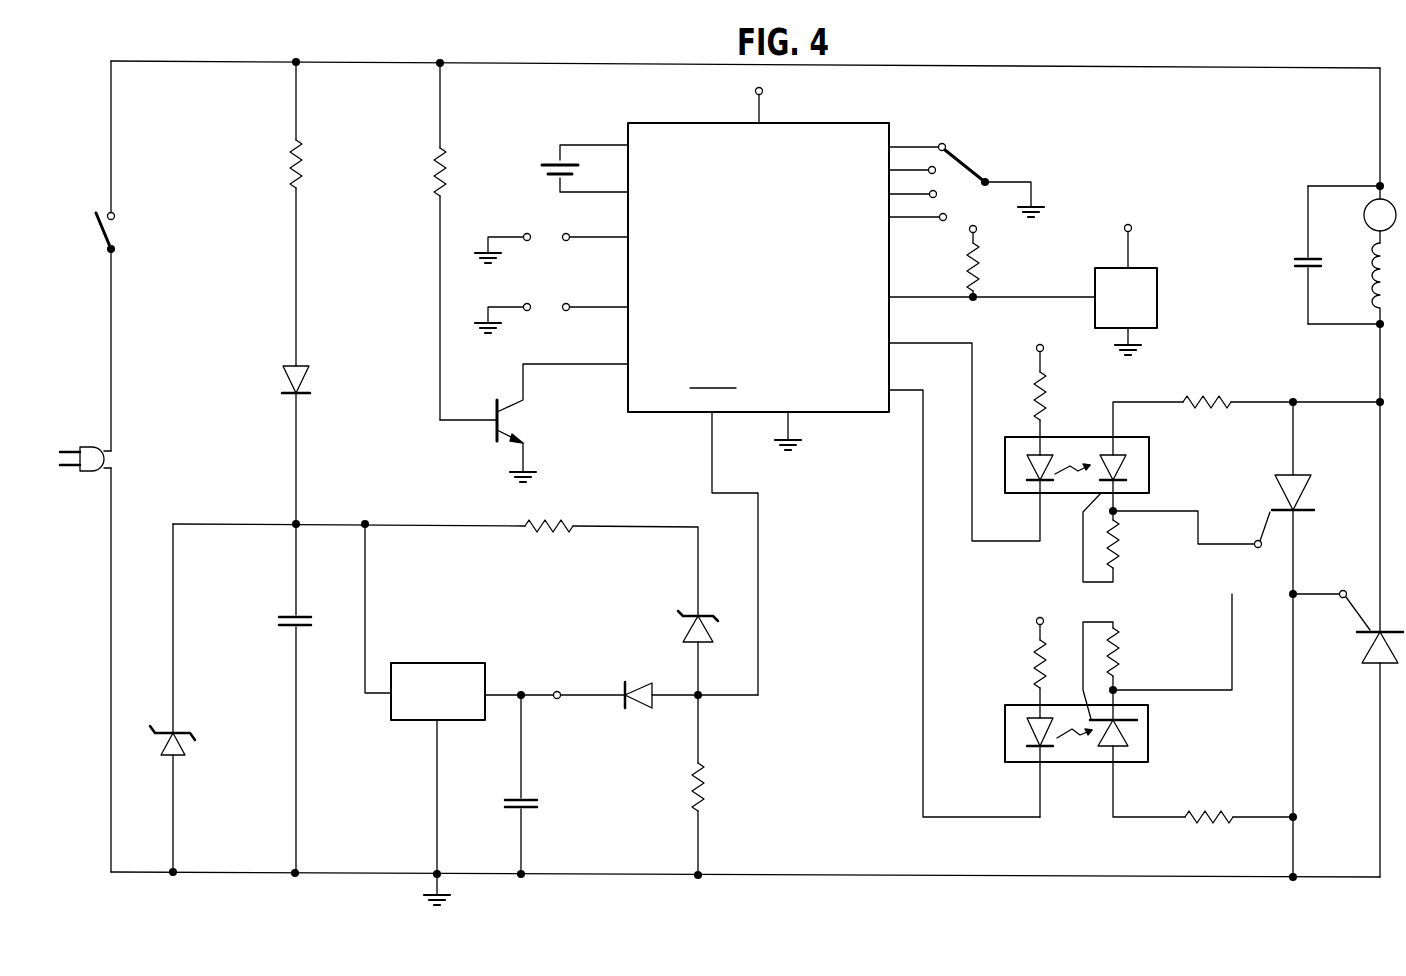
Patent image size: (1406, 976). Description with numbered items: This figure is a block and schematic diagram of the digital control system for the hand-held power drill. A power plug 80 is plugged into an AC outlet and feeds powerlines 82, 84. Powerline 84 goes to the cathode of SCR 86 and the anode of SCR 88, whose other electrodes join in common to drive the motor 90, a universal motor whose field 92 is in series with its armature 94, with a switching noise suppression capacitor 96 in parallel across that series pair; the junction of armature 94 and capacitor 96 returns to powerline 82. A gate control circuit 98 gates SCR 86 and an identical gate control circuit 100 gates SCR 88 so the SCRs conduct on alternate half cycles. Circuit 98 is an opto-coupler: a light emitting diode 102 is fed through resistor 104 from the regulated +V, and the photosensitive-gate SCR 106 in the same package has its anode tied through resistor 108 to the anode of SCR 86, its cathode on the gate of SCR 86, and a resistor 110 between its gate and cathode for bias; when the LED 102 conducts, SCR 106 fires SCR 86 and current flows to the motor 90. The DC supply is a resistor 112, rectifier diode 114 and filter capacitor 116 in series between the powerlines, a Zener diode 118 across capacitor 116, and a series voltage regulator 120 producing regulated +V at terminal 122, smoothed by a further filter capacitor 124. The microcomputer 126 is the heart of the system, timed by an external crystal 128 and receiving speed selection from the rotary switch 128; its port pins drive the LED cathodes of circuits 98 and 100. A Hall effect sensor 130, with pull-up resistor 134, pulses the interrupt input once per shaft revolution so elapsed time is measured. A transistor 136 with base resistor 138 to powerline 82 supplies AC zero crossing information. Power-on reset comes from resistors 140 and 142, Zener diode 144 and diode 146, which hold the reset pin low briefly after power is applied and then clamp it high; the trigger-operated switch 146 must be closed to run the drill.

The power plug 80 is at (90, 444).
The powerline 82 is at (238, 66).
The powerline 84 is at (262, 870).
The SCR 86 is at (1306, 490).
The SCR 88 is at (1364, 664).
The motor 90 is at (1329, 255).
The field 92 is at (1372, 302).
The armature 94 is at (1364, 220).
The switching noise suppression capacitor 96 is at (1296, 258).
The gate control circuit 98 is at (1086, 425).
The gate control circuit 100 is at (1150, 758).
The light emitting diode 102 is at (1032, 452).
The resistor 104 is at (1038, 394).
The SCR with photosensitive gate 106 is at (1100, 458).
The resistor 108 is at (1217, 384).
The resistor 110 is at (1120, 548).
The resistor 112 is at (302, 170).
The rectifier diode 114 is at (306, 380).
The filter capacitor 116 is at (185, 748).
The Zener diode 118 is at (280, 626).
The series voltage regulator 120 is at (487, 662).
The terminal 122 is at (554, 702).
The filter capacitor 124 is at (530, 806).
The microcomputer 126 is at (676, 122).
The crystal / rotary switch 128 is at (545, 166).
The Hall effect sensor 130 is at (1160, 306).
The pull-up resistor 134 is at (980, 262).
The transistor 136 is at (493, 406).
The resistor 138 is at (432, 180).
The resistor 140 is at (553, 524).
The resistor 142 is at (703, 790).
The Zener diode 144 is at (683, 626).
The diode / switch 146 is at (117, 233).